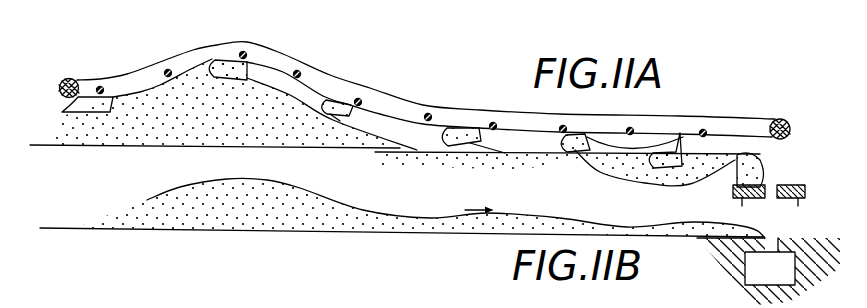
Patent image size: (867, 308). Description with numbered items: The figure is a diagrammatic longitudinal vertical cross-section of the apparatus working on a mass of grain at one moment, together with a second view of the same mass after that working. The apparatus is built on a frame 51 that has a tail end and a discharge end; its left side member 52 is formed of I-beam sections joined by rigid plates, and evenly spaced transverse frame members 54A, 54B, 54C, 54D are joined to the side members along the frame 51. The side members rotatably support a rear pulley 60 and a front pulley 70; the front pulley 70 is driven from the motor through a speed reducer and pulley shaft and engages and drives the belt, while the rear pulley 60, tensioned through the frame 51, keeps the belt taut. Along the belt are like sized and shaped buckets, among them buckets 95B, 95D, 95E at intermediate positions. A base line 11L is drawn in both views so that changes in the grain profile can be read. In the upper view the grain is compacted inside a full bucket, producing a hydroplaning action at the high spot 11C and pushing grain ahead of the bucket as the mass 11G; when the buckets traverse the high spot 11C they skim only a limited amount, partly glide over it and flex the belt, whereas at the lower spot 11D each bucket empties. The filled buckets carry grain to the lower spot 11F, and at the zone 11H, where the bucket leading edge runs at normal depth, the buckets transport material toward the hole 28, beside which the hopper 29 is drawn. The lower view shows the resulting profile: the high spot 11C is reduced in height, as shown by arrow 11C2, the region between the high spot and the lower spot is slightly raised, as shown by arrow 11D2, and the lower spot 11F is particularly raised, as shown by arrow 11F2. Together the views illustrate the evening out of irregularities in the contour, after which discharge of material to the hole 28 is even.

In FIG. 11A, the frame 51 is at (133, 80).
In FIG. 11A, the left side member 52 is at (422, 105).
In FIG. 11A, the rear pulley 60 is at (67, 77).
In FIG. 11A, the front pulley 70 is at (787, 116).
In FIG. 11A, the transverse frame member 54A is at (100, 86).
In FIG. 11A, the transverse frame member 54B is at (167, 69).
In FIG. 11A, the transverse frame member 54C is at (245, 52).
In FIG. 11A, the transverse frame member 54D is at (300, 71).
In FIG. 11A, the bucket 95B is at (236, 60).
In FIG. 11A, the bucket 95D is at (460, 128).
In FIG. 11A, the bucket 95E is at (342, 100).
In FIG. 11A, the high spot 11C is at (255, 90).
In FIG. 11A, the mass of grain in front of bucket 11G is at (234, 104).
In FIG. 11A, the base line 11L is at (80, 146).
In FIG. 11B, the base line 11L is at (73, 227).
In FIG. 11A, the lower spot 11D is at (502, 156).
In FIG. 11A, the lower spot 11F is at (655, 172).
In FIG. 11A, the zone of normal depth 11H is at (739, 170).
In FIG. 11A, the hole 28 is at (771, 188).
In FIG. 11B, the hole 28 is at (771, 246).
In FIG. 11B, the hopper 29 is at (782, 279).
In FIG. 11B, the arrow 11C2 is at (223, 177).
In FIG. 11B, the arrow 11D2 is at (360, 212).
In FIG. 11B, the arrow 11F2 is at (618, 229).